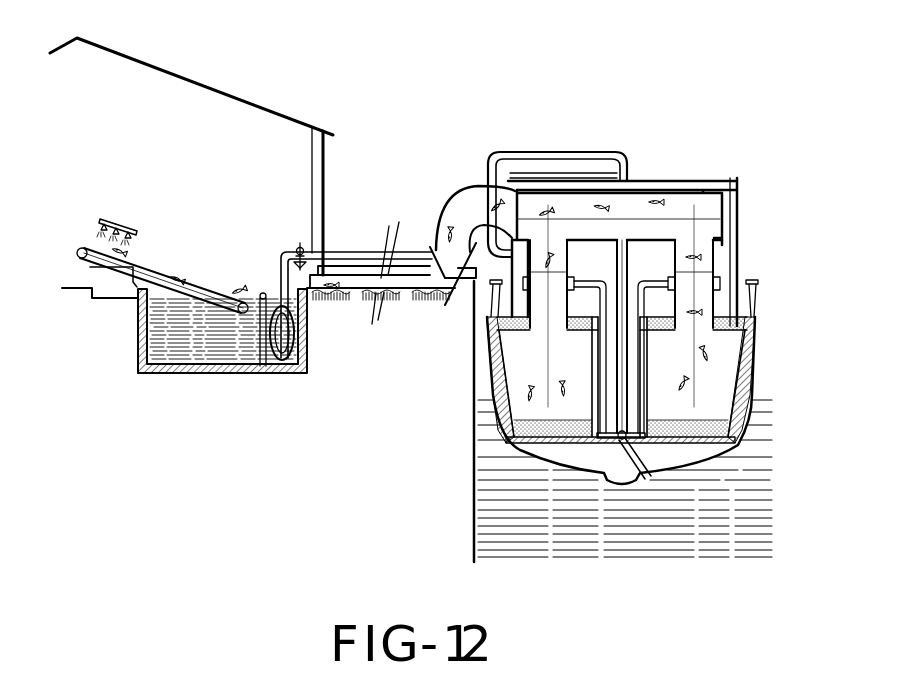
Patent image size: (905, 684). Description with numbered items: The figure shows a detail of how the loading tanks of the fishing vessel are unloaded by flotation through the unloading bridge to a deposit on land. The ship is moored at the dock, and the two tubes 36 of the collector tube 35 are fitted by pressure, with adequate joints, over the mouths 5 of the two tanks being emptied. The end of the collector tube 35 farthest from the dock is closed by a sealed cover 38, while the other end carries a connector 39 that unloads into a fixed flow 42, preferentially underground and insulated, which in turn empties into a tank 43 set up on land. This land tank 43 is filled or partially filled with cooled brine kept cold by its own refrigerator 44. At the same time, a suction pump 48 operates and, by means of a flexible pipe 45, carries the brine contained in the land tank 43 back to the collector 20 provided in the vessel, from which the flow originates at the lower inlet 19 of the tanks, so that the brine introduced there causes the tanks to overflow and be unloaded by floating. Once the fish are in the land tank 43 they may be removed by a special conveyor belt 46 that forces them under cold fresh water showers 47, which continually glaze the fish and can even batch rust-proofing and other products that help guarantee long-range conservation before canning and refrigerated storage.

The mouths of the loading tanks 5 is at (608, 353).
The inlet 19 is at (569, 413).
The collector 20 is at (575, 522).
The collector tube 35 is at (626, 208).
The tubes 36 is at (641, 260).
The cover 38 is at (646, 284).
The connector 39 is at (474, 174).
The fixed flow 42 is at (393, 336).
The tank 43 is at (222, 374).
The refrigerator 44 is at (269, 376).
The flexible pipe 45 is at (454, 214).
The conveyor belt 46 is at (162, 243).
The cold fresh water showers 47 is at (118, 190).
The suction pump 48 is at (338, 192).